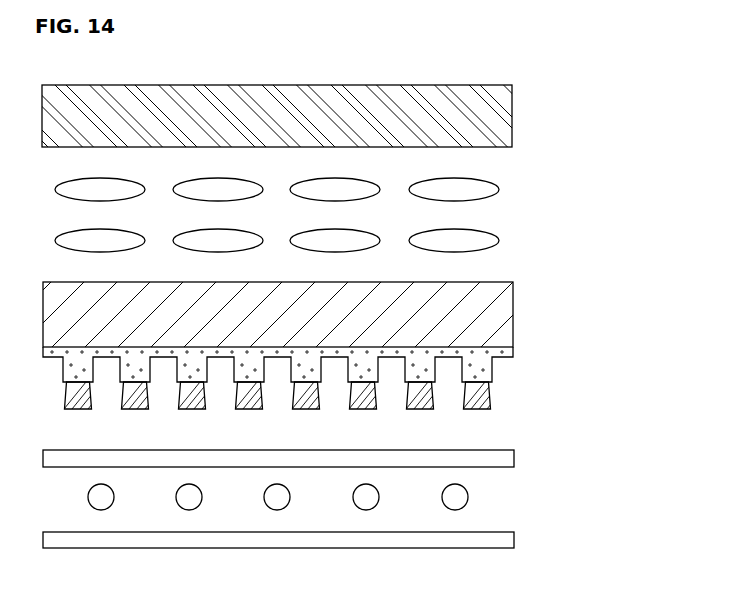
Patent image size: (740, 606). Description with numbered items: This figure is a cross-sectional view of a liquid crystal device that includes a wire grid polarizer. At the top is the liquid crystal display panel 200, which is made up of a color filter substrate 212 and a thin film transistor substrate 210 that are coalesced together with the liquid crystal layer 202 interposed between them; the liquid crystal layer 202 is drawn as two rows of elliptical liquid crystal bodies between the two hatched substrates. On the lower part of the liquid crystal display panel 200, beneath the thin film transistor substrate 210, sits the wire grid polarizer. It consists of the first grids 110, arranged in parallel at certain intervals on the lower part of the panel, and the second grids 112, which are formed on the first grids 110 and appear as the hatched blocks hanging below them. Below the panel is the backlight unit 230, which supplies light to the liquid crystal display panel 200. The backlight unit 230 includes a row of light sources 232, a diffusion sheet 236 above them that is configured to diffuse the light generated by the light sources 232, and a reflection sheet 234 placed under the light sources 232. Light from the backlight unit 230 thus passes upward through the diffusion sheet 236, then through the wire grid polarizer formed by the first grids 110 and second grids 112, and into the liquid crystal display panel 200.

The liquid crystal display panel 200 is at (315, 216).
The color filter substrate 212 is at (513, 113).
The liquid crystal layer 202 is at (499, 236).
The thin film transistor substrate 210 is at (286, 314).
The first grids 110 is at (493, 369).
The second grids 112 is at (492, 400).
The backlight unit 230 is at (331, 497).
The diffusion sheet 236 is at (515, 457).
The light sources 232 is at (468, 494).
The reflection sheet 234 is at (515, 537).